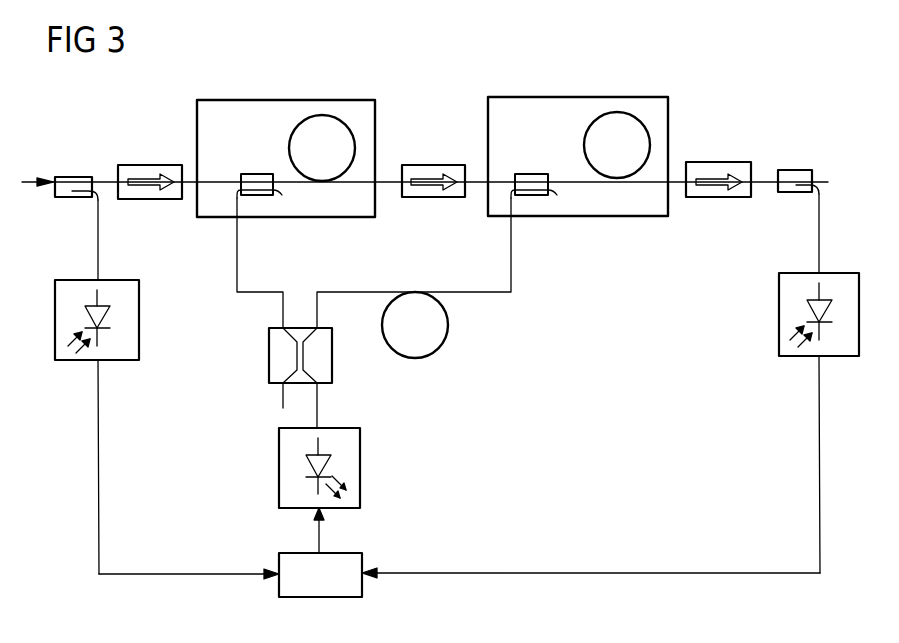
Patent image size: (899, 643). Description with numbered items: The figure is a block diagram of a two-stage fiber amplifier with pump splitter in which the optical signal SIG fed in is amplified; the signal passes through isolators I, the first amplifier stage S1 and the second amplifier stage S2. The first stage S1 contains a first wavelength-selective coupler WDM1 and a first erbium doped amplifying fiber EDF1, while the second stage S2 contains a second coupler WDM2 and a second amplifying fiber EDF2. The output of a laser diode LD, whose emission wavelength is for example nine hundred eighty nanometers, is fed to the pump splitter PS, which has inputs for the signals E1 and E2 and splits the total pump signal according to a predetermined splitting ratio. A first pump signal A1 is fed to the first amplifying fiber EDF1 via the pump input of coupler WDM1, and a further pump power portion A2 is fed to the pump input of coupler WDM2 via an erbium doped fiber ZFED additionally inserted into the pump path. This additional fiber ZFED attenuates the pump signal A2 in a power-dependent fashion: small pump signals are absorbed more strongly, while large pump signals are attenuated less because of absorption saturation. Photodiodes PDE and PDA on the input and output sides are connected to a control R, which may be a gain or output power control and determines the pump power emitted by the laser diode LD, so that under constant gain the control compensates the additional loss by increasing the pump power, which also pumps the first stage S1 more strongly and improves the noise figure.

The optical signal SIG is at (30, 176).
The isolator I is at (152, 164).
The first amplifier stage S1 is at (287, 99).
The second amplifier stage S2 is at (578, 96).
The first wavelength-selective coupler WDM1 is at (258, 173).
The second wavelength-selective coupler WDM2 is at (533, 173).
The first erbium doped amplifying fiber EDF1 is at (322, 148).
The second erbium doped amplifying fiber EDF2 is at (617, 145).
The first pump signal A1 is at (237, 258).
The further pump signal A2 is at (353, 290).
The erbium doped additional fiber ZFED is at (415, 325).
The pump splitter PS is at (269, 357).
The first pump splitter input signal E1 is at (318, 398).
The second pump splitter input signal E2 is at (282, 398).
The laser diode LD is at (360, 467).
The input-side photodiode PDE is at (139, 317).
The output-side photodiode PDA is at (779, 315).
The control R is at (320, 552).